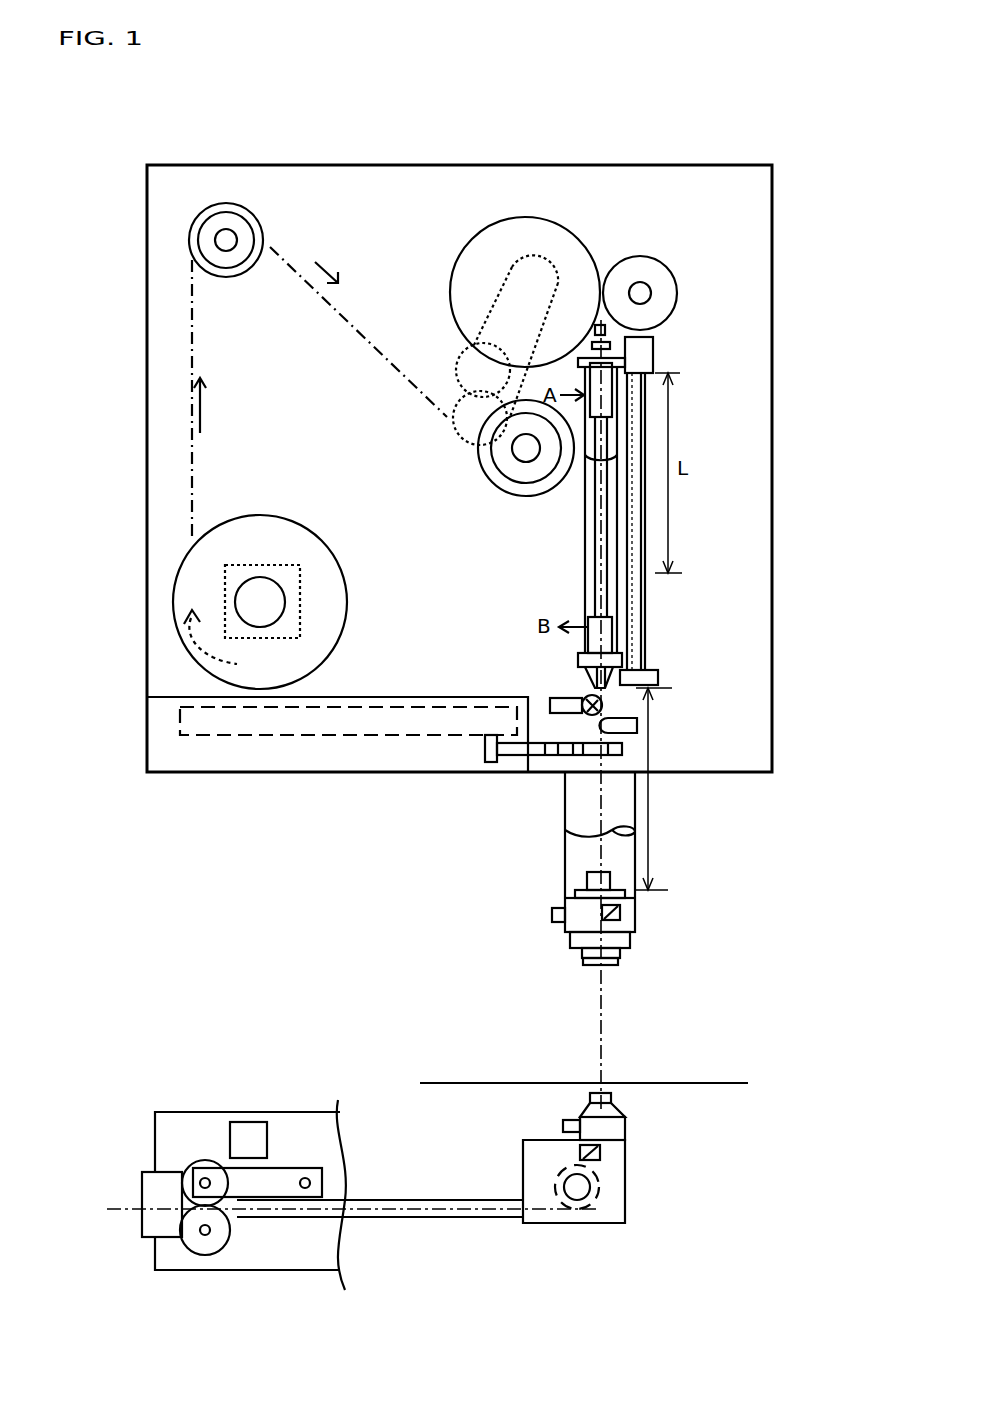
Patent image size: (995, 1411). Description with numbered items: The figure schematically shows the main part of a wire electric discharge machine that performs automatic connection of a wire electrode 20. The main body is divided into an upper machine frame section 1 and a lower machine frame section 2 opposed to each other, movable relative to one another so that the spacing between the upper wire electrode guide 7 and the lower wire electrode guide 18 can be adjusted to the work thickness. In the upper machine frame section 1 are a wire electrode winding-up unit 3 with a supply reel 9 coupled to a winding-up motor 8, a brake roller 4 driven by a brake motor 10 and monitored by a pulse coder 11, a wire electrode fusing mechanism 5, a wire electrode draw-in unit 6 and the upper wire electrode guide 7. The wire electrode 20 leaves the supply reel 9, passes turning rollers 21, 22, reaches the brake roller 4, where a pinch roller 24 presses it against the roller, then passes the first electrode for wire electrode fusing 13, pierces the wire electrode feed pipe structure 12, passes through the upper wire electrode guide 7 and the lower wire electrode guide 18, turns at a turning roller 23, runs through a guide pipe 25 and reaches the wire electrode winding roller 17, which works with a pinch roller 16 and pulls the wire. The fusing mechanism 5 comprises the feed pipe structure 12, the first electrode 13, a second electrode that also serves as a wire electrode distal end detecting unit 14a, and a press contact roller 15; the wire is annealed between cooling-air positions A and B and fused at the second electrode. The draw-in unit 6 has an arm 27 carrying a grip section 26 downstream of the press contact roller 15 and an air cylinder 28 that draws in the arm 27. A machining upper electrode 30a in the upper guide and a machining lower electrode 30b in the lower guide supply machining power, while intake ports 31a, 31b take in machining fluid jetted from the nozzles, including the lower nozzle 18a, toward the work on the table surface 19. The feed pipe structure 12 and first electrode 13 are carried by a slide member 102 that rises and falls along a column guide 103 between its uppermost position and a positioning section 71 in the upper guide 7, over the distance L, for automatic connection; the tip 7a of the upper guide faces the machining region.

The upper machine frame section 1 is at (456, 165).
The lower machine frame section 2 is at (188, 1112).
The wire electrode winding-up unit 3 is at (193, 663).
The brake roller 4 is at (470, 240).
The wire electrode fusing mechanism 5 is at (570, 575).
The wire electrode draw-in unit 6 is at (340, 735).
The upper wire electrode guide 7 is at (568, 948).
The pressing head tip 7a is at (618, 962).
The winding-up motor 8 is at (225, 588).
The supply reel 9 is at (185, 637).
The brake motor 10 is at (462, 428).
The pulse coder 11 is at (460, 372).
The wire electrode feed pipe structure 12 is at (585, 520).
The first electrode for wire electrode fusing 13 is at (615, 340).
The wire electrode distal end detecting unit 14a is at (587, 697).
The press contact roller 15 is at (600, 725).
The pinch roller 16 is at (208, 1160).
The wire electrode winding roller 17 is at (205, 1255).
The lower wire electrode guide 18 is at (625, 1128).
The lower nozzle 18a is at (612, 1098).
The table surface 19 is at (655, 1083).
The wire electrode 20 is at (192, 306).
The turning roller 21 is at (262, 238).
The turning roller 22 is at (493, 480).
The turning roller 23 is at (600, 1195).
The pinch roller 24 is at (640, 257).
The guide pipe 25 is at (398, 1200).
The grip section 26 is at (620, 752).
The arm 27 is at (548, 776).
The air cylinder 28 is at (197, 740).
The machining upper electrode 30a is at (622, 912).
The machining lower electrode 30b is at (575, 1153).
The intake port 31a is at (552, 915).
The intake port 31b is at (563, 1125).
The positioning section 71 is at (587, 880).
The slide member 102 is at (653, 362).
The column guide 103 is at (648, 630).